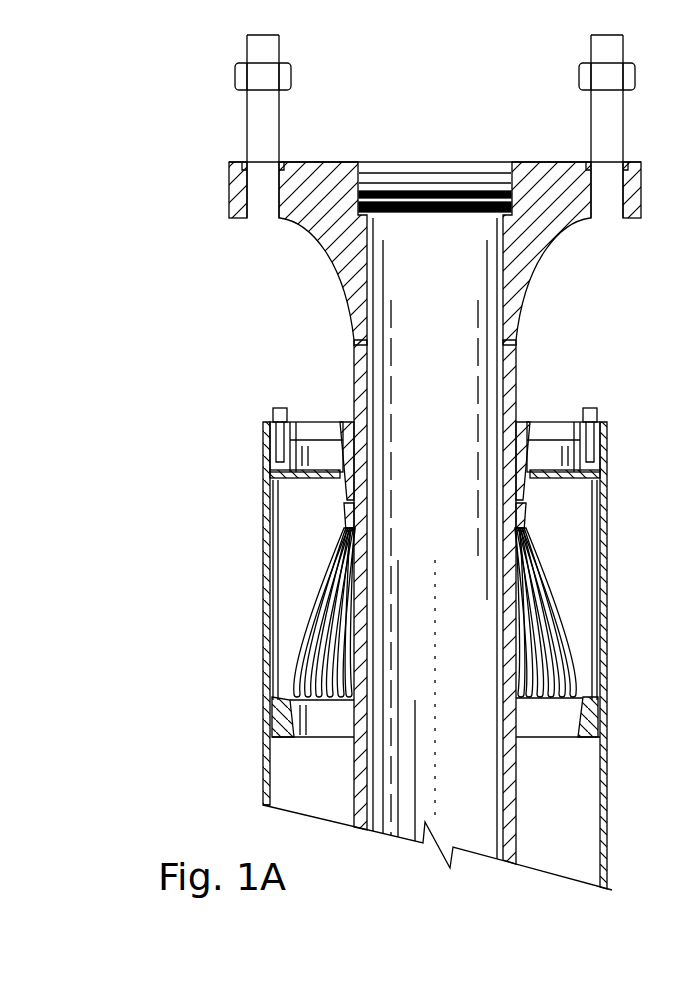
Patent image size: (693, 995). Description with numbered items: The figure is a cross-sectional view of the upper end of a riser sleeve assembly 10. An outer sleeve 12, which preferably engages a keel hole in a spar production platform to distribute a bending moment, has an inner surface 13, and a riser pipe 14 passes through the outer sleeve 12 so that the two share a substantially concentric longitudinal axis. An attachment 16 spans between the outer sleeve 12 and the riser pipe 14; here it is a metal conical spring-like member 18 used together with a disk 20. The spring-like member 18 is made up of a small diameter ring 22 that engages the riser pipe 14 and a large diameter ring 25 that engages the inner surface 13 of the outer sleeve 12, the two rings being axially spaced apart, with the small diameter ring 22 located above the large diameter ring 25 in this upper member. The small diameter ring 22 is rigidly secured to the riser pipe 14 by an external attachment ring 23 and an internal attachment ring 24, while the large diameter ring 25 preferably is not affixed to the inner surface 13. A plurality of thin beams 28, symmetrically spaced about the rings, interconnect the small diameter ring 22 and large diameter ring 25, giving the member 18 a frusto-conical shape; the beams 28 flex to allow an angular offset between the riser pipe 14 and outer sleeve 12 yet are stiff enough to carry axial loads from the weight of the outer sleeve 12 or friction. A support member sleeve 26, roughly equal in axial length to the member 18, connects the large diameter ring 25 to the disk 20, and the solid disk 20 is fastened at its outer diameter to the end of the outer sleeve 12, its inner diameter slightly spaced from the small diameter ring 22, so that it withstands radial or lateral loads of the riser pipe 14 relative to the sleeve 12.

The riser sleeve assembly 10 is at (182, 134).
The outer sleeve 12 is at (262, 749).
The inner surface 13 is at (285, 778).
The riser pipe 14 is at (348, 323).
The attachment 16 is at (252, 525).
The conical spring-like member 18 is at (296, 598).
The disk 20 is at (308, 435).
The small diameter ring 22 is at (340, 485).
The external attachment ring 23 is at (525, 440).
The internal attachment ring 24 is at (525, 513).
The large diameter ring 25 is at (585, 737).
The support member sleeve 26 is at (590, 585).
The beams 28 is at (335, 548).